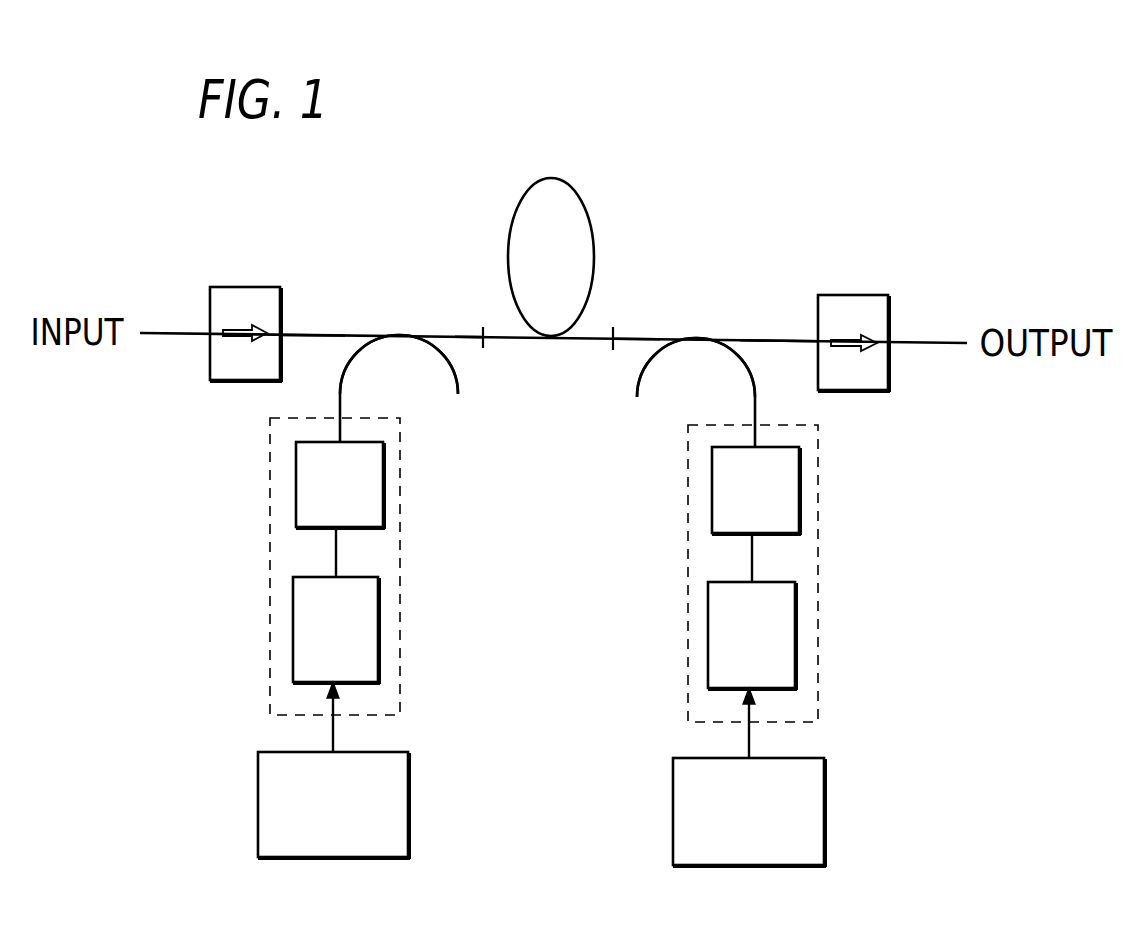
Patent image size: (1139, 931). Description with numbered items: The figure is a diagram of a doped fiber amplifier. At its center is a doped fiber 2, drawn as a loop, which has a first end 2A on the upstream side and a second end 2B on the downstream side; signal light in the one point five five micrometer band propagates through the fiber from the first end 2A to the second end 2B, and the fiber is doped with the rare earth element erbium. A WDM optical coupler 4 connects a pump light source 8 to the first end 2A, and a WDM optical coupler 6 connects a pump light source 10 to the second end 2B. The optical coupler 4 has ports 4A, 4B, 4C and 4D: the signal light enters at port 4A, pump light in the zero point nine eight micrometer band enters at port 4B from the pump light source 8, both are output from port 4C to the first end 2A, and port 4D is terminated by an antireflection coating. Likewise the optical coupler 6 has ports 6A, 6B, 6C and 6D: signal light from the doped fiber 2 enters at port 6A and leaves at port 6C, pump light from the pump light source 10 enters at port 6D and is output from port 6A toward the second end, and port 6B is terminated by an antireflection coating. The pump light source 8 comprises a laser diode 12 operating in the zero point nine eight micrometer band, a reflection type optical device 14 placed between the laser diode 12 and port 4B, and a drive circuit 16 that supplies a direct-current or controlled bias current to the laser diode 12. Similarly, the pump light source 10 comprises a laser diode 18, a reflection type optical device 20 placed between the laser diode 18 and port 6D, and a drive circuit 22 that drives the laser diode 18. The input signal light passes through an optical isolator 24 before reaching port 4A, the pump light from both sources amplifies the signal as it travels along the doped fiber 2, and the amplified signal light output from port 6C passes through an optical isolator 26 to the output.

The doped fiber 2 is at (567, 173).
The first end 2A is at (503, 345).
The second end 2B is at (587, 345).
The WDM optical coupler 4 is at (385, 304).
The port 4A is at (312, 330).
The port 4B is at (343, 374).
The port 4C is at (452, 332).
The port 4D is at (458, 392).
The WDM optical coupler 6 is at (725, 309).
The port 6A is at (640, 333).
The port 6B is at (638, 390).
The port 6C is at (780, 333).
The port 6D is at (742, 370).
The pump light source 8 is at (403, 588).
The pump light source 10 is at (677, 595).
The laser diode 12 is at (293, 630).
The reflection type optical device 14 is at (296, 497).
The drive circuit 16 is at (280, 750).
The laser diode 18 is at (795, 640).
The reflection type optical device 20 is at (799, 505).
The drive circuit 22 is at (803, 755).
The optical isolator 24 is at (230, 277).
The optical isolator 26 is at (838, 292).